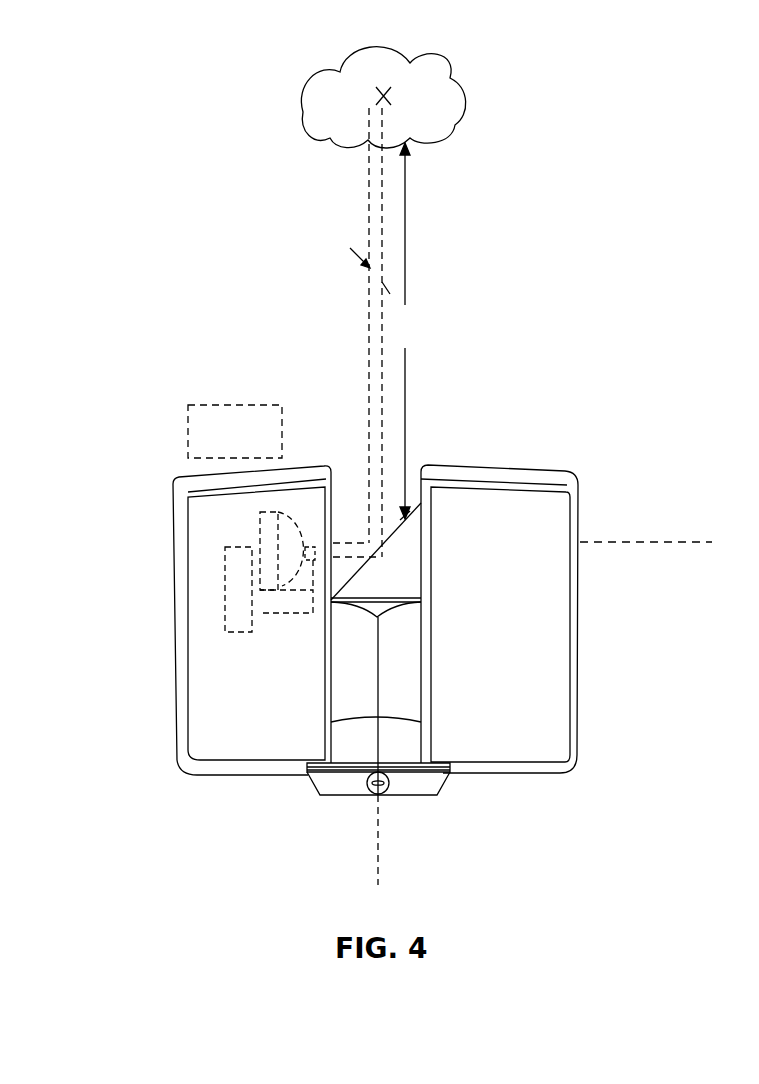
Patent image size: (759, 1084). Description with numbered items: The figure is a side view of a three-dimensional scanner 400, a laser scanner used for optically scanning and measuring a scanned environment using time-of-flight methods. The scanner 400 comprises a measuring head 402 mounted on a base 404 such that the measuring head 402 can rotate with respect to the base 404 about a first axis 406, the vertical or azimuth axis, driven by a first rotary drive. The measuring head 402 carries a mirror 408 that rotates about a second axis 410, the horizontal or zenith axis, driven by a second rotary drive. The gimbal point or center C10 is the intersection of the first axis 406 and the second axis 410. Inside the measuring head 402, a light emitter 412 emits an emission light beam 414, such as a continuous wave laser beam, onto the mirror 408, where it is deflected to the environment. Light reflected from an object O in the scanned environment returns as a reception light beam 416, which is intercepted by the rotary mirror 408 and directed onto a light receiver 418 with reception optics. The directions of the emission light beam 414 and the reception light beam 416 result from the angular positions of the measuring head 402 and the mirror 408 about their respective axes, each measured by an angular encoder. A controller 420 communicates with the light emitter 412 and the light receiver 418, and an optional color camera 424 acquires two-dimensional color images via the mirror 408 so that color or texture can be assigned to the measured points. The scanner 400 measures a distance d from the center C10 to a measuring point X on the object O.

The 3D scanner 400 is at (211, 97).
The measuring head 402 is at (578, 697).
The base 404 is at (350, 797).
The first axis 406 is at (378, 858).
The mirror 408 is at (410, 563).
The second axis 410 is at (648, 542).
The light emitter 412 is at (307, 586).
The emission light beam 414 is at (381, 228).
The reception light beam 416 is at (369, 283).
The light receiver 418 is at (270, 532).
The controller 420 is at (225, 555).
The color camera 424 is at (188, 426).
The object O is at (455, 75).
The center C10 is at (408, 515).
The distance d is at (405, 331).